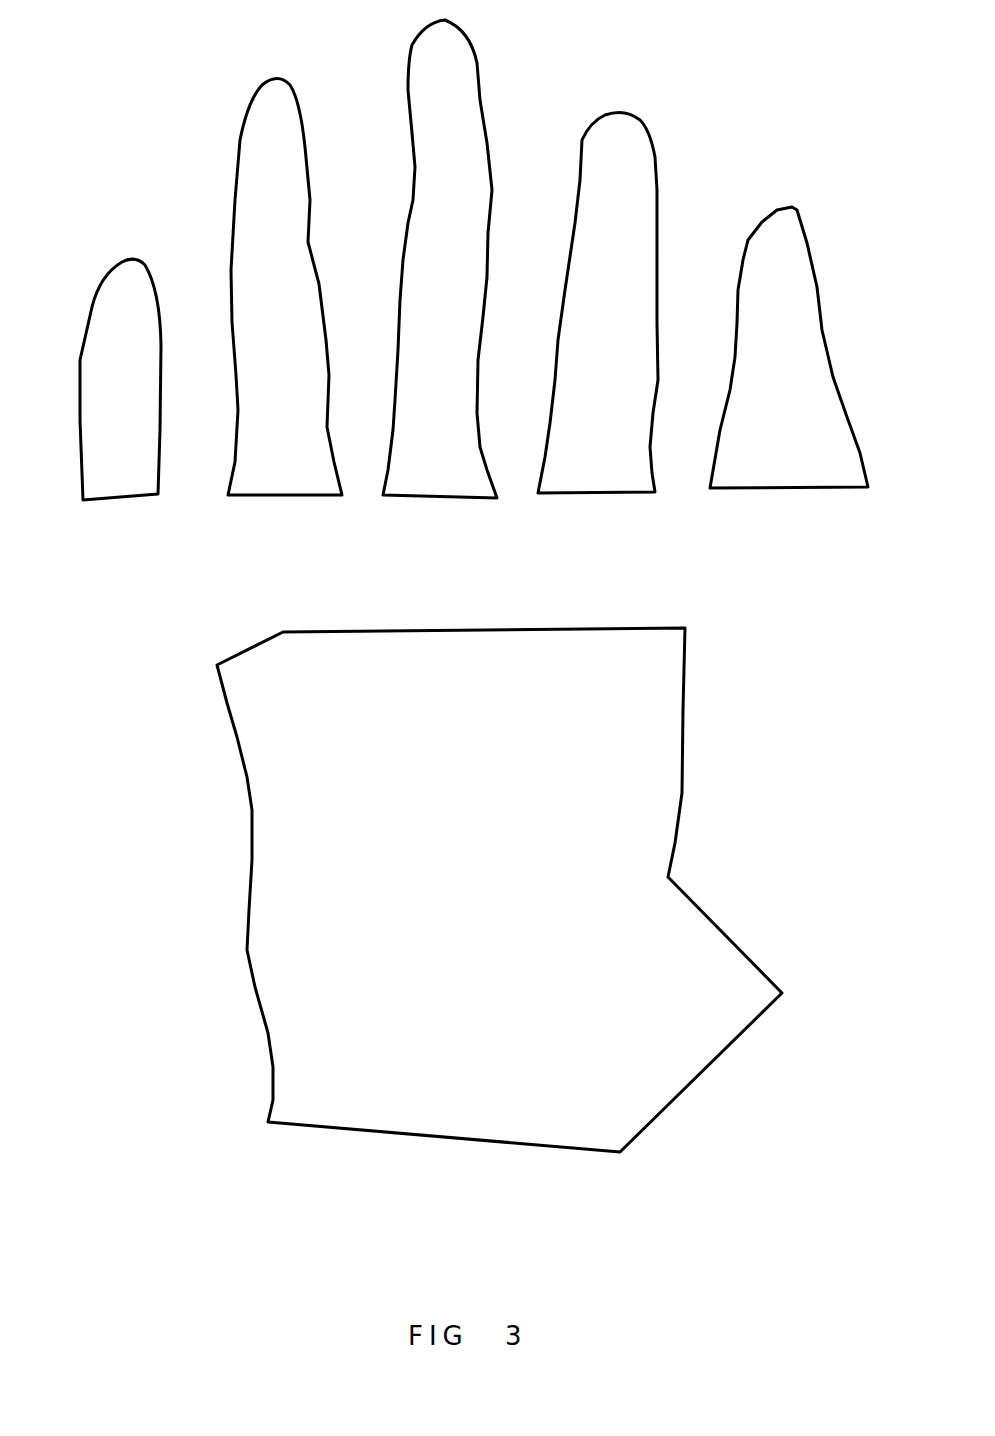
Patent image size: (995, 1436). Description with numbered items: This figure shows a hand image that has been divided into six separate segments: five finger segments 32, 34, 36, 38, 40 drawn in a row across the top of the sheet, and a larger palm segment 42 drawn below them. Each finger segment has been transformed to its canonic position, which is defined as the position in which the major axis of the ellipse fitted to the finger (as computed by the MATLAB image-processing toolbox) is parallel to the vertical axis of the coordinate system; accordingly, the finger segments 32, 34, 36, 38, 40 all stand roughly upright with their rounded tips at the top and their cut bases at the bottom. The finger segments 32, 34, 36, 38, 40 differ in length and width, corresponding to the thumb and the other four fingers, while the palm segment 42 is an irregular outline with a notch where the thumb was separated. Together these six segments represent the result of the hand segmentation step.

The finger segment 32 is at (802, 260).
The finger segment 34 is at (597, 183).
The finger segment 36 is at (423, 90).
The finger segment 38 is at (257, 137).
The finger segment 40 is at (102, 325).
The palm piece 42 is at (665, 692).